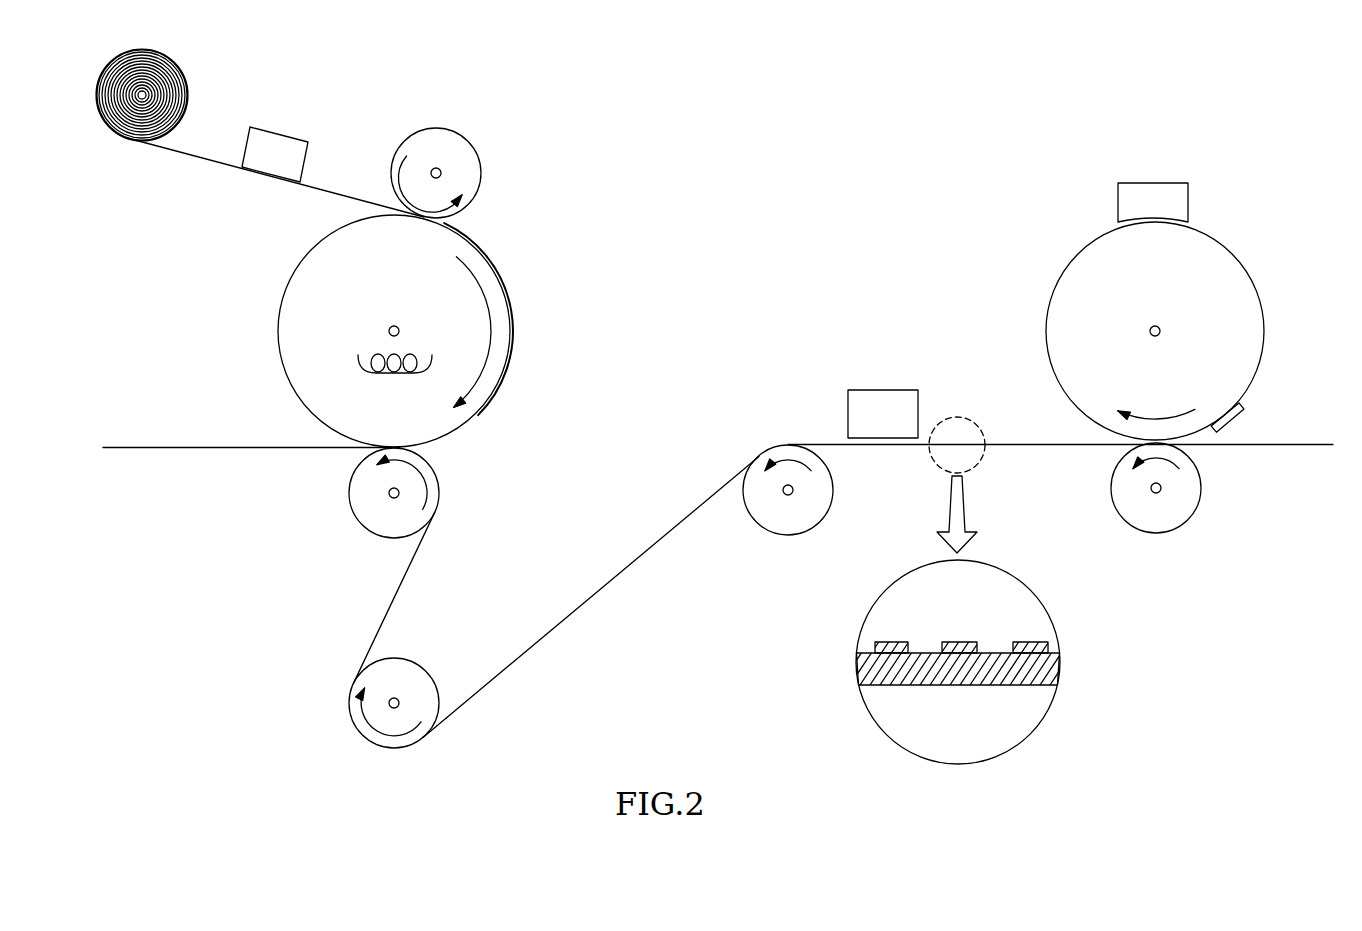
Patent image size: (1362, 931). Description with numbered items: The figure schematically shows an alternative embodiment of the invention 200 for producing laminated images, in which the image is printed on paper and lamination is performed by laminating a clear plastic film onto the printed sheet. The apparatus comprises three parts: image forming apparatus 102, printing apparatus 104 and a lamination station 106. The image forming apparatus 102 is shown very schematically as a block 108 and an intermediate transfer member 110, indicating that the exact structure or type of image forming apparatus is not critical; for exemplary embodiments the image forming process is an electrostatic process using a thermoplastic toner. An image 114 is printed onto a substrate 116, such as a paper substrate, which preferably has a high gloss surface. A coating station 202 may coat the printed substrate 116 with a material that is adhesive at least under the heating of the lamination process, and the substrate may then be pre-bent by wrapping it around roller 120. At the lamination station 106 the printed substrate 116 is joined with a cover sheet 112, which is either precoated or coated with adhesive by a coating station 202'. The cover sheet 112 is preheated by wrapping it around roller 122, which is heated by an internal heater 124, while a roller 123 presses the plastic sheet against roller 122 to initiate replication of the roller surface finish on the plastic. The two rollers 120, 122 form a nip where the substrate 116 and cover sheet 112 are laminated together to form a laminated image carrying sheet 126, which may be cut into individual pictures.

The alternative embodiment of the invention 200 is at (620, 243).
The image forming apparatus 102 is at (1028, 297).
The printing apparatus 104 is at (1243, 522).
The lamination station 106 is at (256, 373).
The block 108 is at (1188, 210).
The intermediate transfer member 110 is at (1238, 260).
The cover sheet 112 is at (202, 157).
The image 114 is at (1244, 403).
The substrate 116 is at (1260, 444).
The roller 120 is at (352, 506).
The roller 122 is at (504, 376).
The roller 123 is at (455, 130).
The internal heater 124 is at (402, 373).
The laminated image carrying sheet 126 is at (248, 452).
The coating station 202 is at (894, 385).
The coating station 202' is at (307, 137).